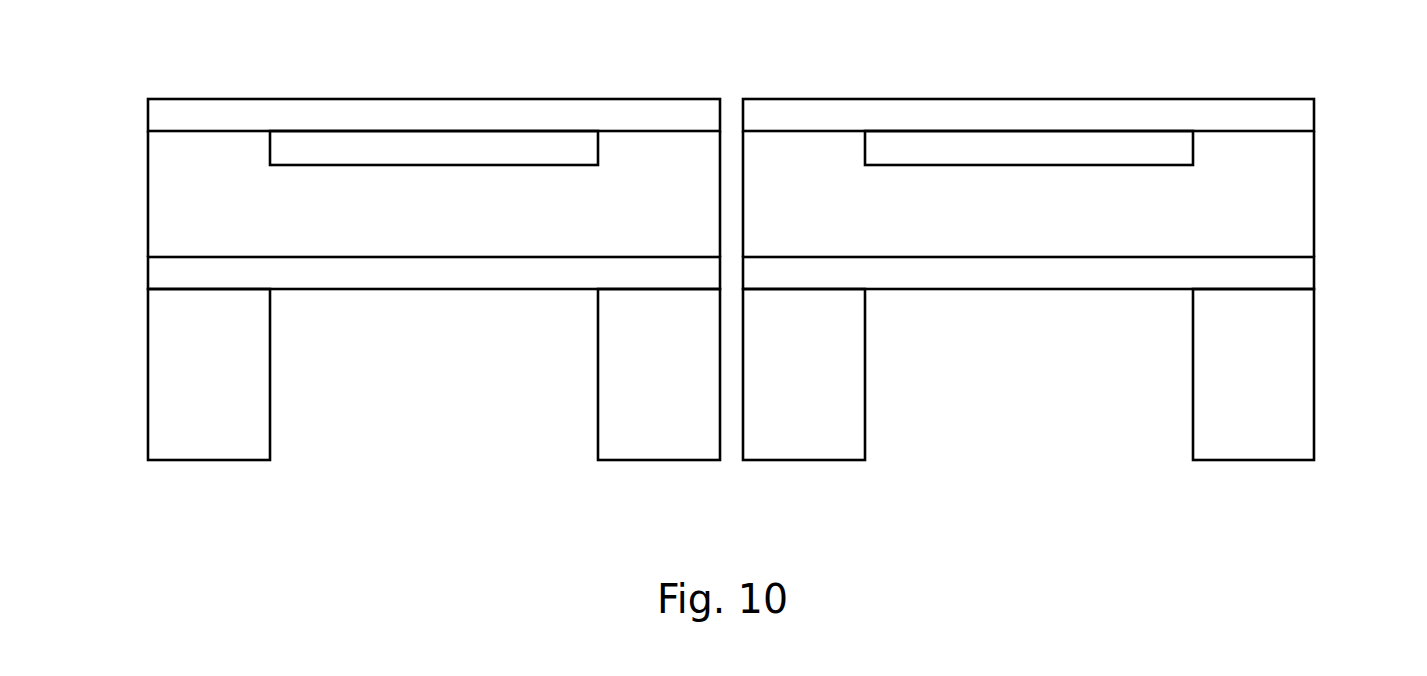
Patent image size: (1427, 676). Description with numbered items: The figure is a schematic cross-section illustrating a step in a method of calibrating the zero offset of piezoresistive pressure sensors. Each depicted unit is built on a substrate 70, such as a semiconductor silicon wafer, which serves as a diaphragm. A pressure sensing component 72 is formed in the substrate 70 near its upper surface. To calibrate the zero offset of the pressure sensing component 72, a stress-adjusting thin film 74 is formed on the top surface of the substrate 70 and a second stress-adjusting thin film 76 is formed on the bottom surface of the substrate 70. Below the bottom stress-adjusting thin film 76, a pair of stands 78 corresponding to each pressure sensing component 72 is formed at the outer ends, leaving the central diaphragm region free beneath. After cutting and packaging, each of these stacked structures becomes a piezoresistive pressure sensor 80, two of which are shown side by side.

The substrate 70 is at (422, 228).
The pressure sensing components 72 is at (438, 152).
The stress-adjusting thin film 74 is at (173, 118).
The stress-adjusting thin film 76 is at (173, 273).
The stands 78 is at (190, 394).
The piezoresistive pressure sensors 80 is at (731, 236).